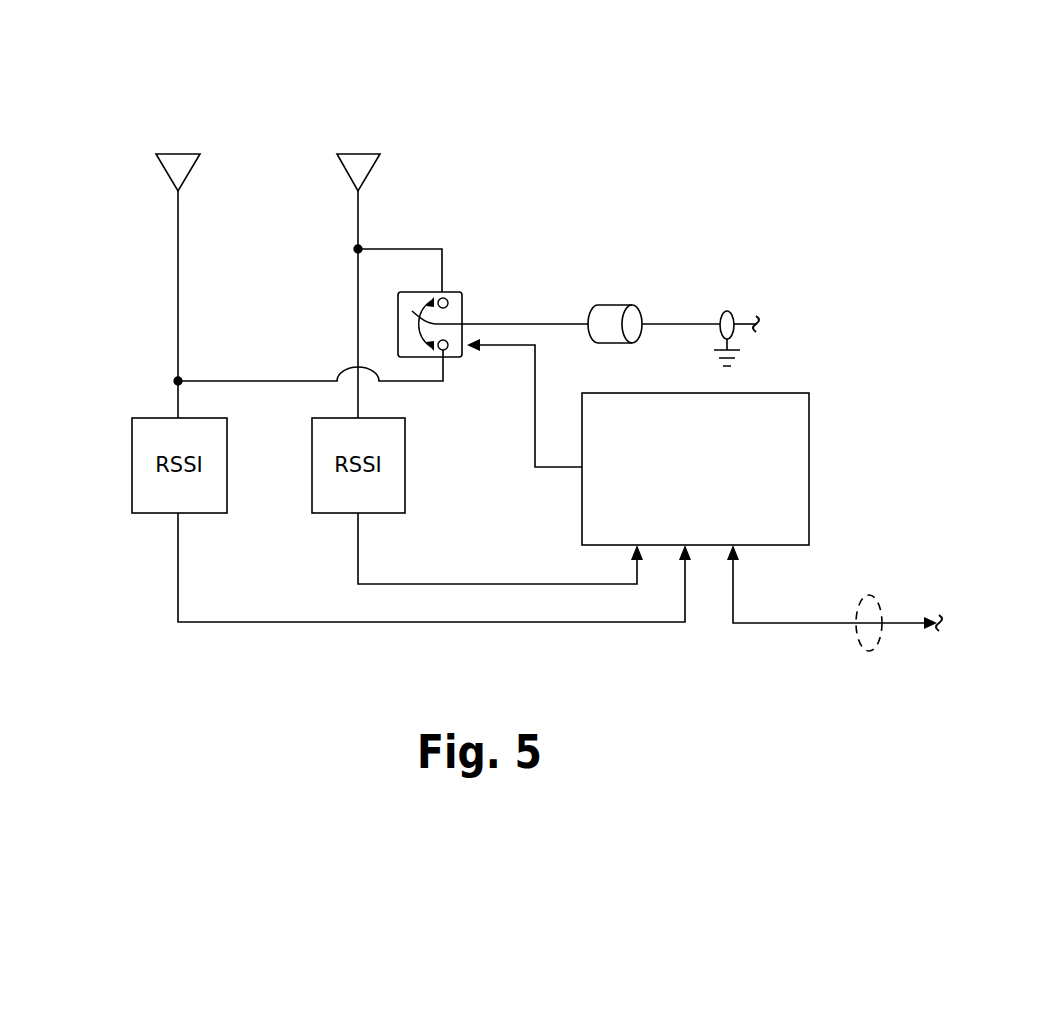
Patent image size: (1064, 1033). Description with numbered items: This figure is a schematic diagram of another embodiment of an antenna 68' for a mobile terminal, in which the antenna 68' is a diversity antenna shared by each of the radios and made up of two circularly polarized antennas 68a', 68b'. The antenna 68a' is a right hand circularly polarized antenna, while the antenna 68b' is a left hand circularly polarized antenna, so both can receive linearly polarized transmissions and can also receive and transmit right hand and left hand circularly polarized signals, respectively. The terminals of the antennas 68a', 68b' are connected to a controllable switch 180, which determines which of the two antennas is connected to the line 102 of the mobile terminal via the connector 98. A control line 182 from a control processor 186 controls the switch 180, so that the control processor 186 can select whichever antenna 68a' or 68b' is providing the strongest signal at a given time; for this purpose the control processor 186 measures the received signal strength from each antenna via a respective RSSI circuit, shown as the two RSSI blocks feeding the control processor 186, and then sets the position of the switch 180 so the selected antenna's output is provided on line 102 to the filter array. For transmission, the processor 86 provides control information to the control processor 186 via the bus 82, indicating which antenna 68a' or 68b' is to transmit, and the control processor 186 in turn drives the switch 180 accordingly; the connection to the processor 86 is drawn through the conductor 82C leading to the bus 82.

The antenna 68' is at (214, 62).
The right hand circularly polarized antenna 68a' is at (151, 286).
The left hand circularly polarized antenna 68b' is at (330, 286).
The controllable switch 180 is at (463, 290).
The connector 98 is at (603, 305).
The line 102 is at (685, 320).
The control processor 186 is at (690, 392).
The control line 182 is at (533, 430).
The control conductor 82C is at (837, 622).
The bus 82 is at (853, 645).
The processor 86 is at (954, 683).